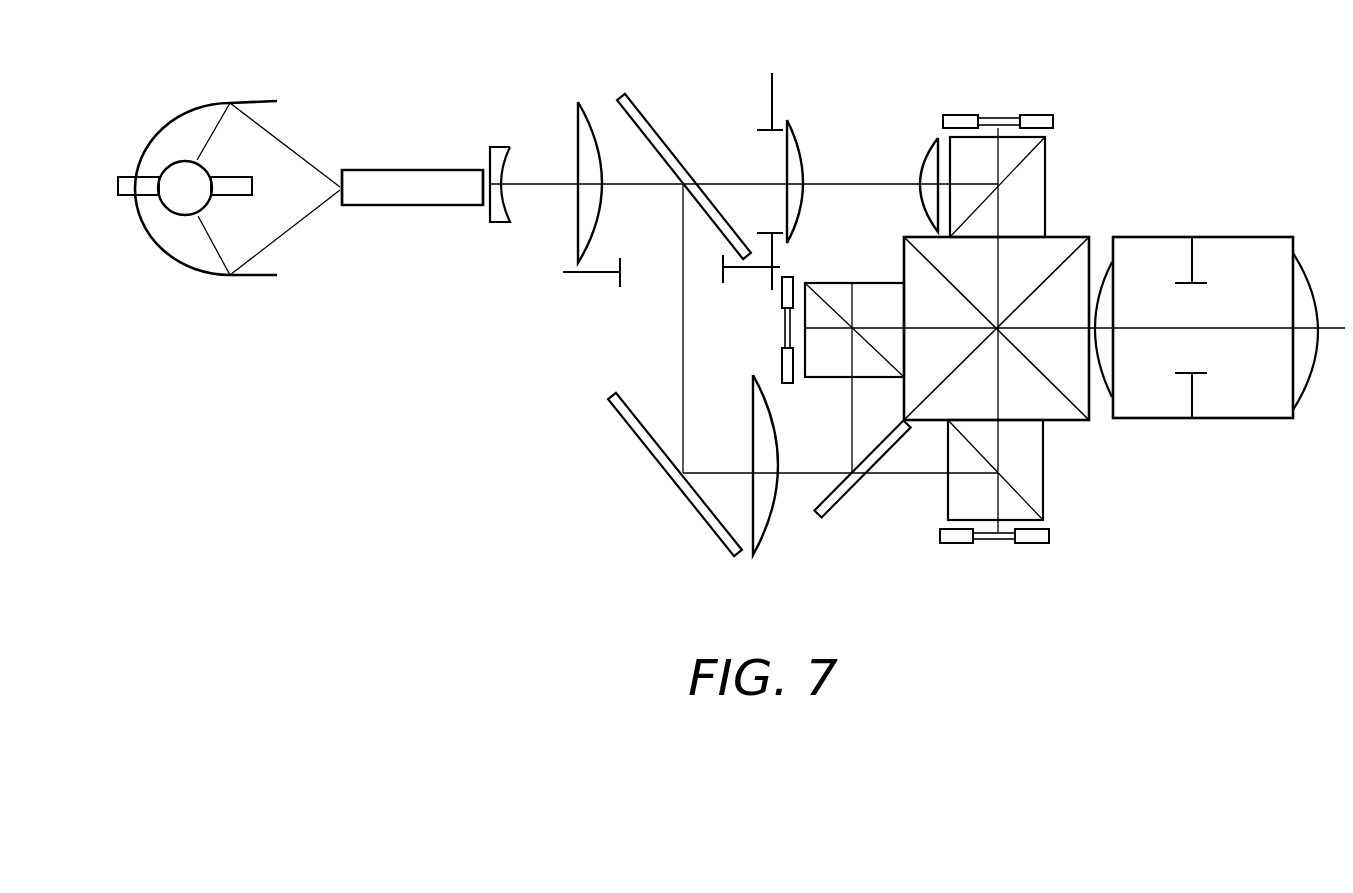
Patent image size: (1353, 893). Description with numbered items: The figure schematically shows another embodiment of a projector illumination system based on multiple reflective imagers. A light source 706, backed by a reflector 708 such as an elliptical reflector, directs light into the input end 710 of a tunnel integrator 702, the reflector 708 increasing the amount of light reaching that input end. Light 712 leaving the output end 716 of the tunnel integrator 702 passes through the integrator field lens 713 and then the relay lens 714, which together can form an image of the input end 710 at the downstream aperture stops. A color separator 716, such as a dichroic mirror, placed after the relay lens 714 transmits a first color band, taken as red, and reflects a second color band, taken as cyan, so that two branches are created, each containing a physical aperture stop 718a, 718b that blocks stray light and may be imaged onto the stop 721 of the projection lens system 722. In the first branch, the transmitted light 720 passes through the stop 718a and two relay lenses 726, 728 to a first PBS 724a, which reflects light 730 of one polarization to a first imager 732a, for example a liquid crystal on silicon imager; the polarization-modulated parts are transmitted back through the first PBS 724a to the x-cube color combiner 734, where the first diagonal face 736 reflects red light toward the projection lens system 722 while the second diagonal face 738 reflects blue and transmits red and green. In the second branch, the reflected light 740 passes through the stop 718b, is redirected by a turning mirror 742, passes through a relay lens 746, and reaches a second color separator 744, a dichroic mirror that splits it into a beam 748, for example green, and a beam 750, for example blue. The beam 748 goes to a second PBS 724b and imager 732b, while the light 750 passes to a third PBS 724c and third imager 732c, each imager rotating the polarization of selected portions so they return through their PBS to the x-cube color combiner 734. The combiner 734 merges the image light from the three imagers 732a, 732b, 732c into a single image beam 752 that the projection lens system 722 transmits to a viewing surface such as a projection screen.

The tunnel integrator 702 is at (384, 206).
The light source 706 is at (117, 183).
The reflector 708 is at (173, 123).
The input end 710 is at (340, 173).
The light 712 is at (543, 179).
The integrator field lens 713 is at (503, 146).
The relay lens 714 is at (577, 252).
The color separator 716 is at (652, 123).
The aperture stop 718a is at (775, 88).
The aperture stop 718b is at (590, 274).
The light 720 is at (726, 181).
The stop 721 is at (1192, 395).
The projection lens system 722 is at (1257, 237).
The first PBS 724a is at (1046, 173).
The second PBS 724b is at (852, 283).
The third PBS 724c is at (1045, 502).
The relay lens 726 is at (800, 136).
The relay lens 728 is at (926, 138).
The light 730 is at (998, 157).
The first imager 732a is at (1030, 114).
The imager 732b is at (781, 300).
The third imager 732c is at (958, 545).
The x-cube color combiner 734 is at (1065, 423).
The first diagonal face 736 is at (1078, 402).
The second diagonal face 738 is at (1068, 243).
The light 740 is at (682, 358).
The fold mirror 742 is at (705, 527).
The second color separator 744 is at (822, 520).
The relay lens 746 is at (757, 547).
The beam 748 is at (851, 412).
The light 750 is at (885, 475).
The image beam 752 is at (1110, 283).